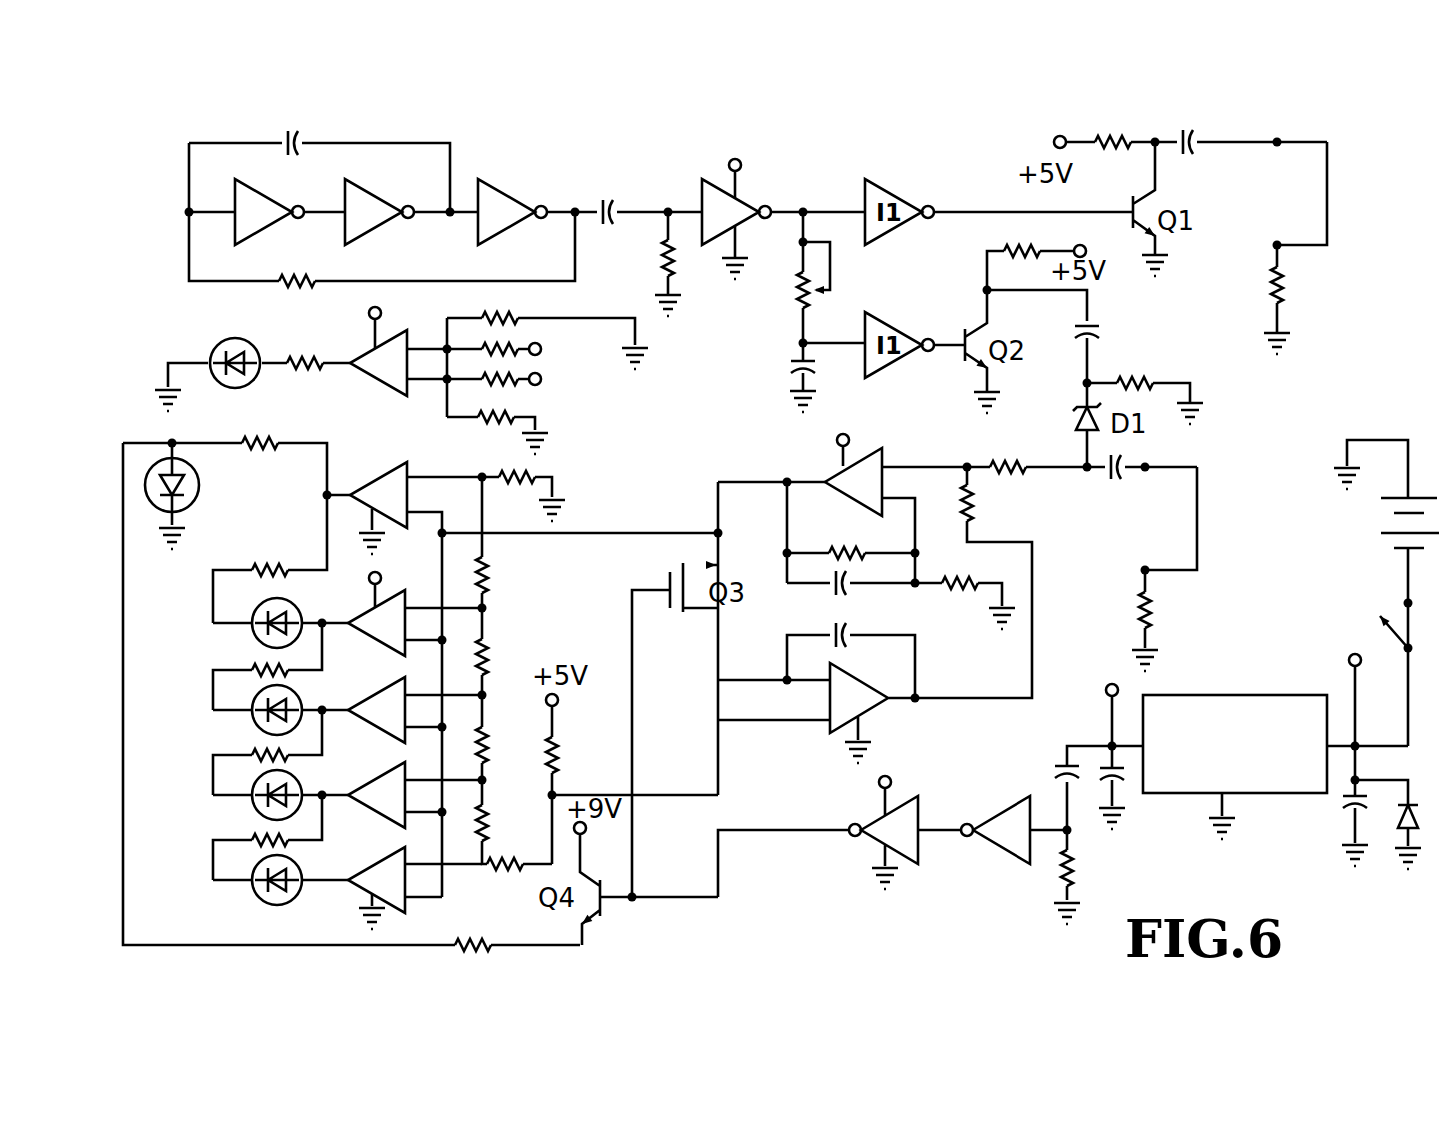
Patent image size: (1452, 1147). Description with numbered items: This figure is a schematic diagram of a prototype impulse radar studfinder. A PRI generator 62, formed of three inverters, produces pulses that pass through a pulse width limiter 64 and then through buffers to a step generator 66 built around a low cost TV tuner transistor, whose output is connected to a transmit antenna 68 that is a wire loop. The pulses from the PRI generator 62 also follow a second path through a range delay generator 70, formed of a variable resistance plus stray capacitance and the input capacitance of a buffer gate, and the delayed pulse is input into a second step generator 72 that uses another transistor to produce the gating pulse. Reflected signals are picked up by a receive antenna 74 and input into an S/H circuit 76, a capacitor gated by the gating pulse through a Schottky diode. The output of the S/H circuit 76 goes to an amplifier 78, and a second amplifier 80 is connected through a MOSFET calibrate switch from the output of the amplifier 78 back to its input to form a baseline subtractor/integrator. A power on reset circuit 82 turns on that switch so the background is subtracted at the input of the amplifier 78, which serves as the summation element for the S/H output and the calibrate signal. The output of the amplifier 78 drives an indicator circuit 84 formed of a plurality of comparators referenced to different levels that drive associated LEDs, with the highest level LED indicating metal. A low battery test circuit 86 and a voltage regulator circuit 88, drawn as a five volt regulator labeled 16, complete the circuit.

The 5V regulator 16 is at (1235, 744).
The PRI generator 62 is at (391, 193).
The pulse width limiter 64 is at (734, 218).
The step generator 66 is at (1255, 124).
The transmit antenna 68 is at (1339, 246).
The range delay generator 70 is at (796, 312).
The step generator 72 is at (1139, 365).
The receive antenna 74 is at (1207, 567).
The S/H circuit 76 is at (1132, 499).
The amplifier 78 is at (902, 553).
The second amplifier 80 is at (899, 693).
The power on reset circuit 82 is at (931, 845).
The indicator circuit 84 is at (420, 694).
The low battery test circuit 86 is at (425, 369).
The voltage regulator circuit 88 is at (1242, 682).